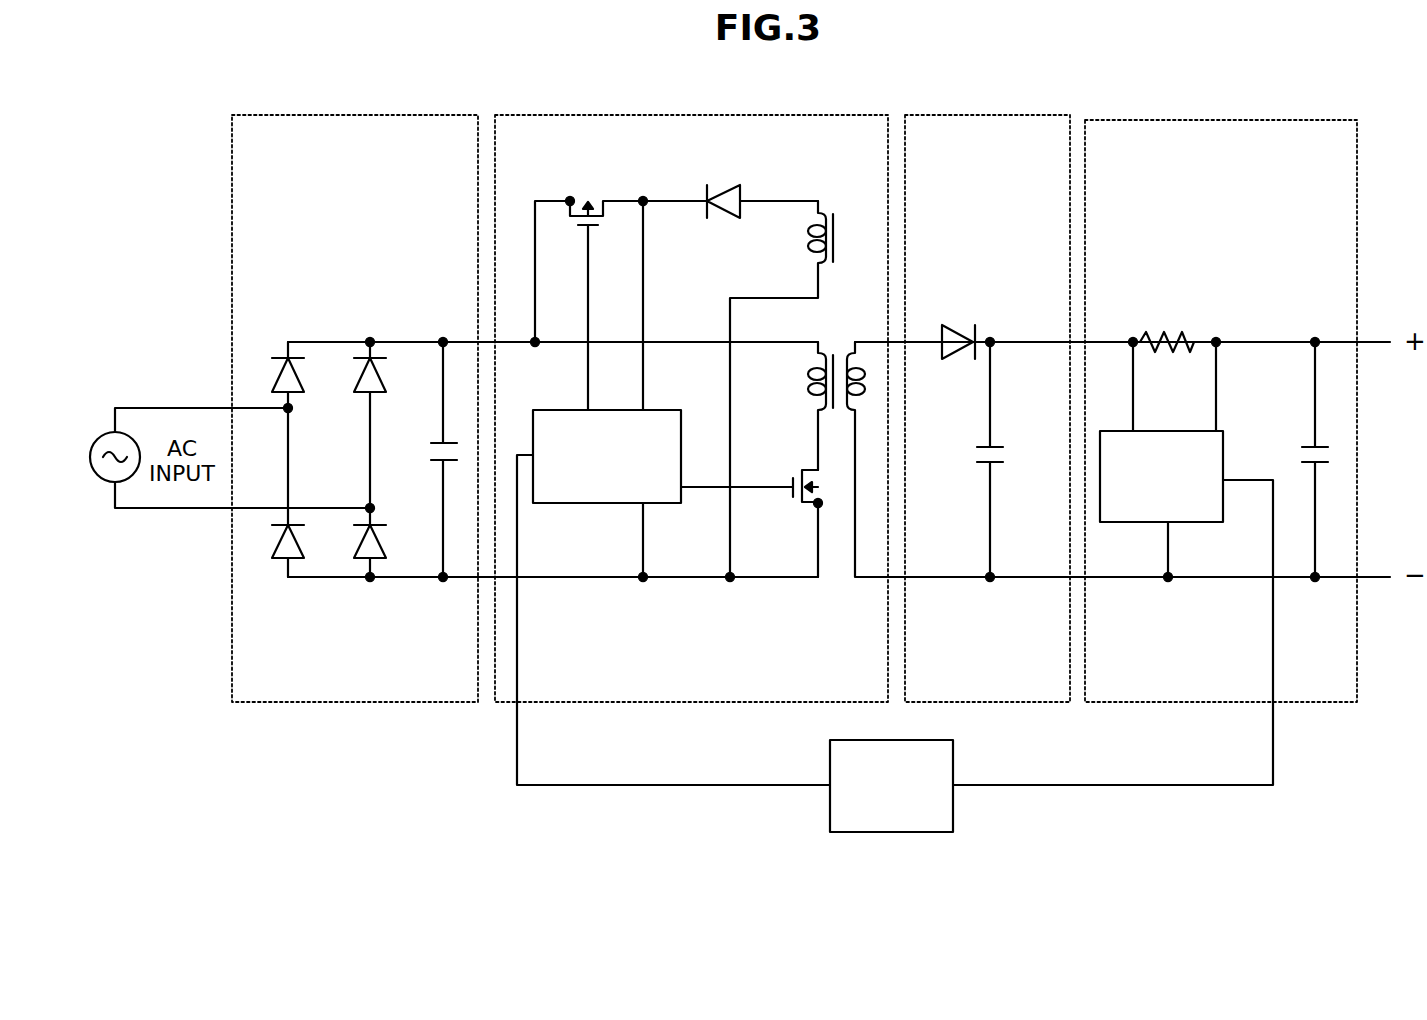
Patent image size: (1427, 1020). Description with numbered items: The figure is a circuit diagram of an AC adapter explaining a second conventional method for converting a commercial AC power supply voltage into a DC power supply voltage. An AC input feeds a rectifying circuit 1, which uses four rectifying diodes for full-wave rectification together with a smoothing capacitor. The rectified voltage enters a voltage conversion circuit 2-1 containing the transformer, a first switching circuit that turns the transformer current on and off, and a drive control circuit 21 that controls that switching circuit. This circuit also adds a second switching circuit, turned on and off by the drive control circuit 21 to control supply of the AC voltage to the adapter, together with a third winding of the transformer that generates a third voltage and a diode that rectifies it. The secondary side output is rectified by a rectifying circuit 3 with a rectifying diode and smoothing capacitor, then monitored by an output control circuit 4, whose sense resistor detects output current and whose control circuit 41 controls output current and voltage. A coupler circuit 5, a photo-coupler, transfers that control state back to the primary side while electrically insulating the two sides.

The rectifying circuit 1 is at (408, 116).
The voltage conversion circuit 2-1 is at (833, 116).
The rectifying circuit 3 is at (990, 116).
The output control circuit 4 is at (1312, 120).
The coupler circuit 5 is at (953, 765).
The drive control circuit 21 is at (682, 427).
The control circuit 41 is at (1150, 431).